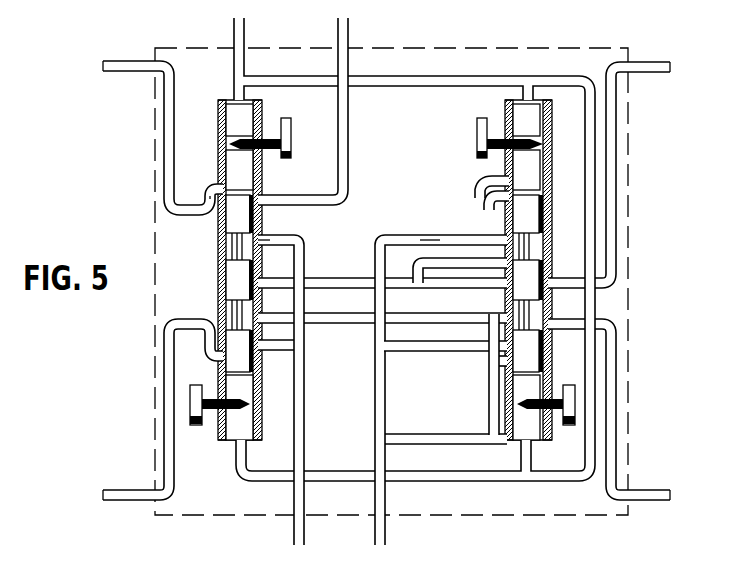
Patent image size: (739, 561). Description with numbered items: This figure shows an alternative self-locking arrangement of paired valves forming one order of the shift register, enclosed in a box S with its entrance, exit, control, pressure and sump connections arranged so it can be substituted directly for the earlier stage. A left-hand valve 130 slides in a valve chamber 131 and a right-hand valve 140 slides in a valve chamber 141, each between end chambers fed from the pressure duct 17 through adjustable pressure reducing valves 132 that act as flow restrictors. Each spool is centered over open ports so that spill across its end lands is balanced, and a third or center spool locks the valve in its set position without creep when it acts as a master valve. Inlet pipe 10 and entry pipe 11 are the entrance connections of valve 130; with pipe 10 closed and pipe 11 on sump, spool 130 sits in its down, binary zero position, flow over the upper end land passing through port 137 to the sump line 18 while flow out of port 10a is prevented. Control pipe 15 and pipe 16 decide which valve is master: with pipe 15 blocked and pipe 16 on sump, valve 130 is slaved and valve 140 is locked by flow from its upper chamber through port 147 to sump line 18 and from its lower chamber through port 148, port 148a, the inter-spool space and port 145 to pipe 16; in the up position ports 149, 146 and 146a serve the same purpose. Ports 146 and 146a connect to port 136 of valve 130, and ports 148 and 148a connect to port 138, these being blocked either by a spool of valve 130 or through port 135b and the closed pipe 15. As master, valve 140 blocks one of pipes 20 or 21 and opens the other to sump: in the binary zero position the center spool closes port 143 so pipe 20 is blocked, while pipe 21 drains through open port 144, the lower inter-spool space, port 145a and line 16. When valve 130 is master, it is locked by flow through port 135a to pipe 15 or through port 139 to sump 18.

The housing S is at (430, 46).
The inlet pipe 10 is at (117, 61).
The port 10a is at (206, 181).
The entry pipe 11 is at (113, 492).
The control pipe 15 is at (293, 527).
The pipe 16 is at (388, 526).
The pressure duct 17 is at (247, 33).
The sump line 18 is at (349, 33).
The pipe 20 is at (641, 63).
The pipe 21 is at (641, 491).
The left-hand valve 130 is at (232, 227).
The valve chamber 131 is at (216, 112).
The adjustable pressure reducing valve 132 is at (289, 123).
The port 135a is at (266, 236).
The port 135b is at (263, 308).
The port 136 is at (255, 282).
The port 137 is at (263, 201).
The port 138 is at (226, 326).
The port 139 is at (270, 350).
The right-hand valve 140 is at (545, 212).
The valve chamber 141 is at (500, 430).
The port 143 is at (548, 279).
The port 144 is at (552, 331).
The port 145 is at (498, 249).
The port 145a is at (472, 313).
The port 146 is at (510, 181).
The port 146a is at (432, 222).
The port 147 is at (504, 197).
The port 148 is at (505, 362).
The port 148a is at (504, 273).
The port 149 is at (500, 345).